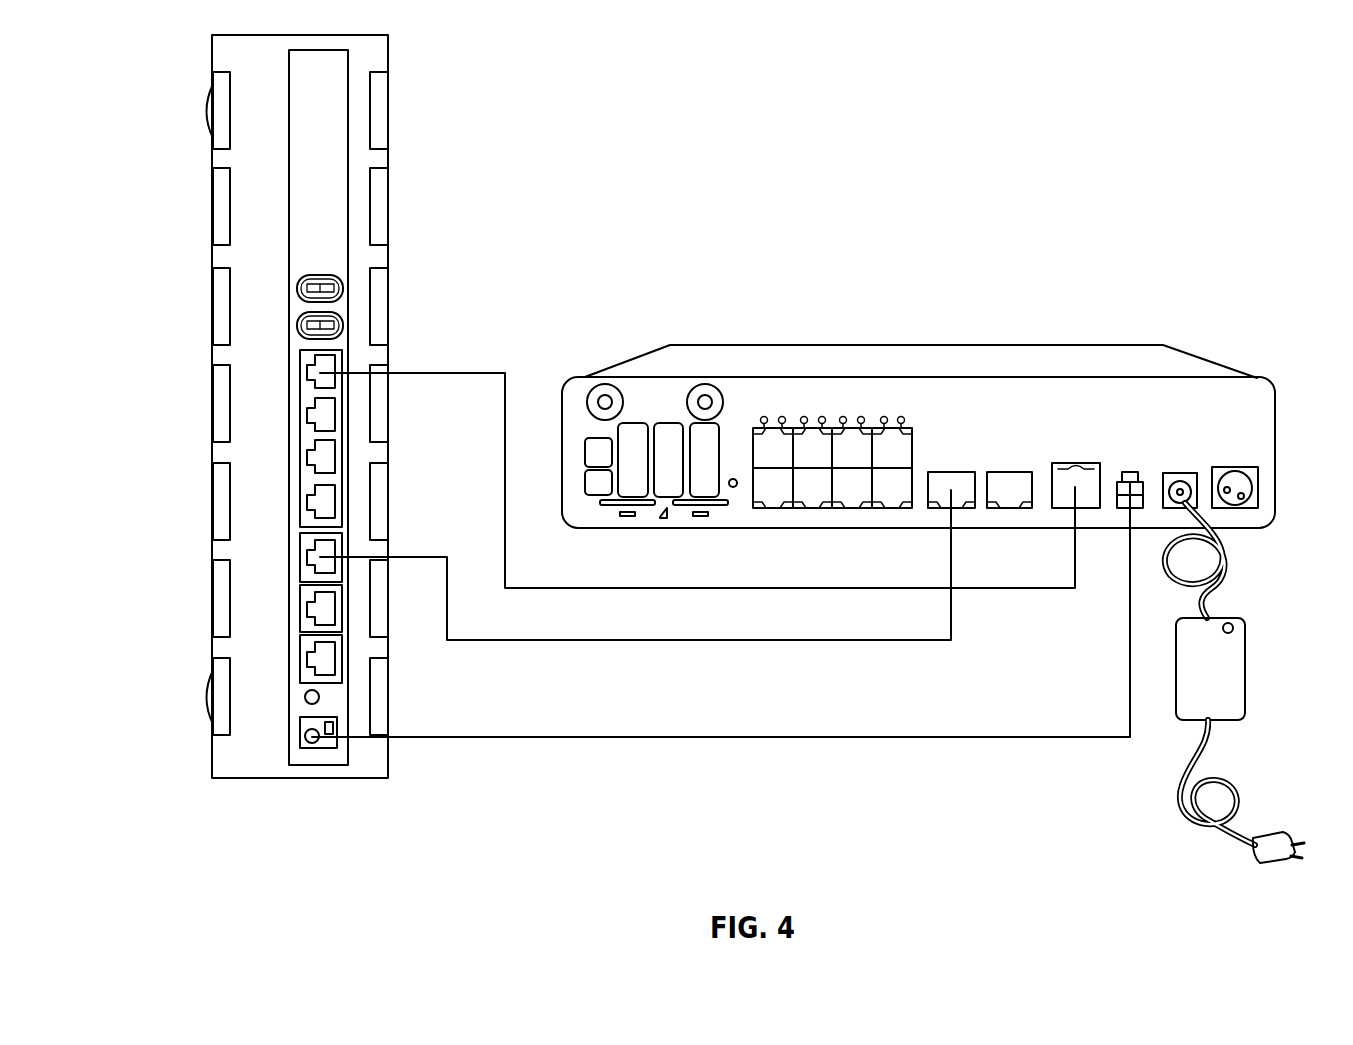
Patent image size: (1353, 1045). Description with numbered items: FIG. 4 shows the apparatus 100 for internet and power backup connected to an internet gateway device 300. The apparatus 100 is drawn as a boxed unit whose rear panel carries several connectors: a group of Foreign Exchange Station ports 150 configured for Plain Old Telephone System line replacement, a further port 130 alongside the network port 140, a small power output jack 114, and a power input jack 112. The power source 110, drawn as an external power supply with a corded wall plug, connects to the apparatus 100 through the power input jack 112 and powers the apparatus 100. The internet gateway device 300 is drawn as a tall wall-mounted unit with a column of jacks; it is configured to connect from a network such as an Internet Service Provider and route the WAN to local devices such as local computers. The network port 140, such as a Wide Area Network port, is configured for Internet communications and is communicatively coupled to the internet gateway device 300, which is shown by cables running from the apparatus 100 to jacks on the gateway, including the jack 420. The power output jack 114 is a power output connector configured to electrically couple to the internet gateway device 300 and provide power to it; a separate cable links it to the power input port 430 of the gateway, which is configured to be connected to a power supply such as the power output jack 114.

The apparatus 100 is at (1113, 343).
The power source 110 is at (1172, 750).
The power input jack 112 is at (1197, 493).
The power output jack 114 is at (1132, 470).
The network port 130 is at (952, 472).
The network port 140 is at (1010, 472).
The Foreign Exchange Station (FXS) ports 150 is at (836, 442).
The internet gateway device 300 is at (390, 110).
The network port of wall unit 420 is at (307, 607).
The power input port 430 is at (312, 742).